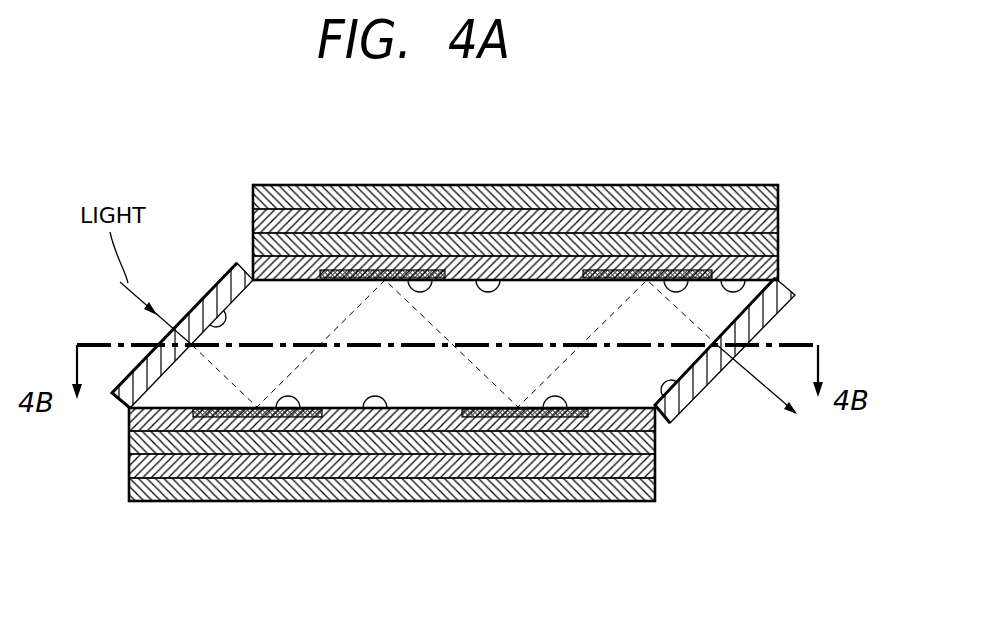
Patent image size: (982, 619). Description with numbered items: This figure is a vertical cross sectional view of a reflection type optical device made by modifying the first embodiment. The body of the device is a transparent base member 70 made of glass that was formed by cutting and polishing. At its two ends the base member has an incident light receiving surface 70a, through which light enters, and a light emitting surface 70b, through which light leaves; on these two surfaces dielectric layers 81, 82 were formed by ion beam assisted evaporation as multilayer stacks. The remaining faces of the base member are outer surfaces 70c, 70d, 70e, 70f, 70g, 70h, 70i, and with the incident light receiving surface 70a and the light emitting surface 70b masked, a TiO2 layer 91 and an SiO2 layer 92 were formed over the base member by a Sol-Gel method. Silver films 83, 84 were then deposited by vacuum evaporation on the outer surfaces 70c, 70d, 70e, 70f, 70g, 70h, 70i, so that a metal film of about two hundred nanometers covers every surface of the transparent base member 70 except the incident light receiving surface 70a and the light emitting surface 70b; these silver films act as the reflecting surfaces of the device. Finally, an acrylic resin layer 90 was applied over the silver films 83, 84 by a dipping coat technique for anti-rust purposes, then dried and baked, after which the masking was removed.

The transparent base member 70 is at (447, 335).
The incident light receiving surface 70a is at (208, 316).
The light emitting surface 70b is at (680, 392).
The outer surface 70c is at (428, 276).
The outer surface 70d is at (682, 276).
The outer surface 70e is at (290, 412).
The outer surface 70f is at (568, 412).
The outer surface 70g is at (492, 276).
The outer surface 70h is at (388, 412).
The outer surface 70i is at (740, 276).
The dielectric layer 81 is at (182, 288).
The dielectric layer 82 is at (739, 321).
The silver film 83 is at (297, 213).
The silver film 84 is at (137, 470).
The acrylic resin layer 90 is at (262, 193).
The TiO2 layer 91 is at (372, 262).
The SiO2 layer 92 is at (330, 243).